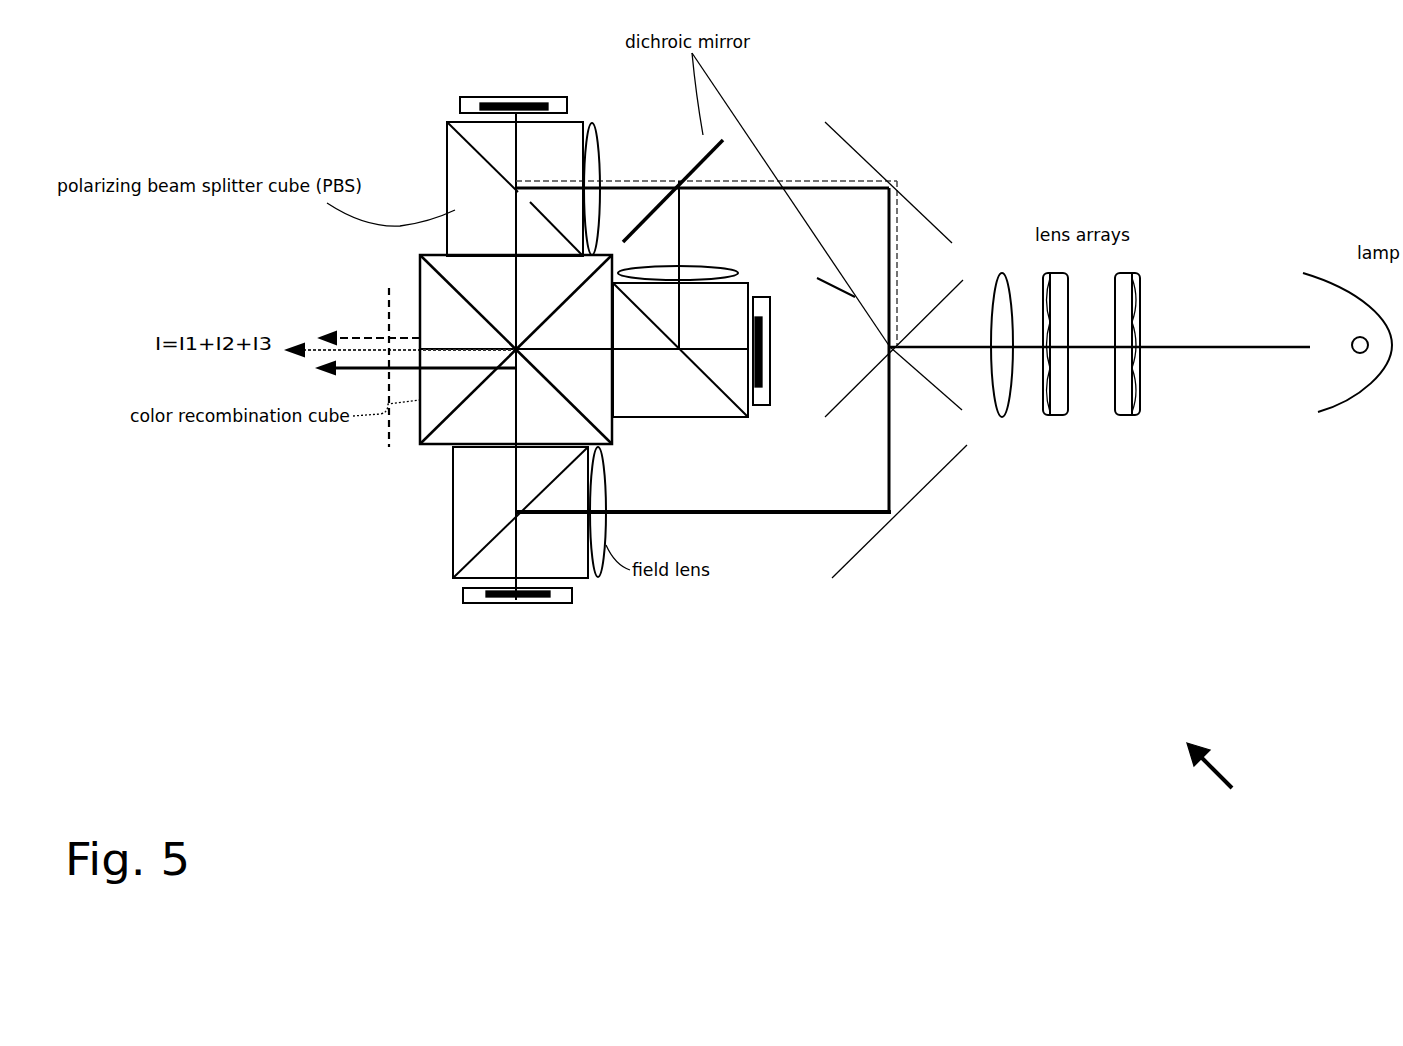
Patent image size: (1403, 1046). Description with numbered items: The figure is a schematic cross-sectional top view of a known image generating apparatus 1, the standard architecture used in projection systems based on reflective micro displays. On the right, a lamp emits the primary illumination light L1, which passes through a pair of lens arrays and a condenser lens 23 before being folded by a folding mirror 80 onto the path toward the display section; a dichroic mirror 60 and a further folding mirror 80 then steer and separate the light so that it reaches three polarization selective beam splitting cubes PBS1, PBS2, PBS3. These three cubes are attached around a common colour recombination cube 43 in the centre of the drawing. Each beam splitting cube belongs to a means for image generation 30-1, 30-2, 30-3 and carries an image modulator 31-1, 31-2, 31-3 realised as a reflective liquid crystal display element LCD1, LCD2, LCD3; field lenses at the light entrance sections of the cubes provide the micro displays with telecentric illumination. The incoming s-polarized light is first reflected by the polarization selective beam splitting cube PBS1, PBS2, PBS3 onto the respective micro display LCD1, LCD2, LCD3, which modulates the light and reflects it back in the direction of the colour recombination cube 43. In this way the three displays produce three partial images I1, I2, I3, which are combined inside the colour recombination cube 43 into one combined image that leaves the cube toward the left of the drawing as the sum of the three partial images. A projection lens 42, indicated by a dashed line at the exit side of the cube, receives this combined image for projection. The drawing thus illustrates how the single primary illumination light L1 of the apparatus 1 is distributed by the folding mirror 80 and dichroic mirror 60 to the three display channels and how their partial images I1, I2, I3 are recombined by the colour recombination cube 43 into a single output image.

The colour recombination cube 43 is at (466, 332).
The projection lens 42 is at (389, 310).
The dichroic mirror 60 is at (688, 180).
The folding mirror 80 is at (868, 162).
The condenser lens 23 is at (1003, 432).
The means for image generation 30-1 is at (505, 81).
The image modulator 31-1 is at (505, 81).
The means for image generation 30-2 is at (708, 372).
The image modulator 31-2 is at (708, 372).
The means for image generation 30-3 is at (500, 634).
The image modulator 31-3 is at (500, 634).
The liquid crystal display element LCD1 is at (467, 107).
The liquid crystal display element LCD2 is at (790, 420).
The liquid crystal display element LCD3 is at (532, 597).
The polarization selective beam splitting cube PBS1 is at (505, 238).
The polarization selective beam splitting cube PBS2 is at (748, 326).
The polarization selective beam splitting cube PBS3 is at (585, 557).
The partial image I1 is at (527, 249).
The partial image I2 is at (627, 352).
The partial image I3 is at (516, 472).
The primary illumination light L1 is at (1238, 338).
The image generating apparatus 1 is at (1221, 780).